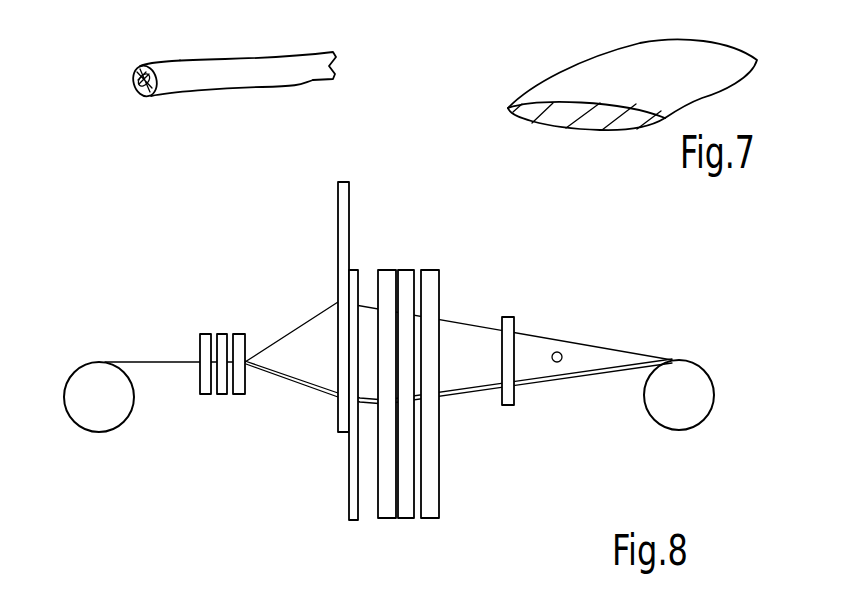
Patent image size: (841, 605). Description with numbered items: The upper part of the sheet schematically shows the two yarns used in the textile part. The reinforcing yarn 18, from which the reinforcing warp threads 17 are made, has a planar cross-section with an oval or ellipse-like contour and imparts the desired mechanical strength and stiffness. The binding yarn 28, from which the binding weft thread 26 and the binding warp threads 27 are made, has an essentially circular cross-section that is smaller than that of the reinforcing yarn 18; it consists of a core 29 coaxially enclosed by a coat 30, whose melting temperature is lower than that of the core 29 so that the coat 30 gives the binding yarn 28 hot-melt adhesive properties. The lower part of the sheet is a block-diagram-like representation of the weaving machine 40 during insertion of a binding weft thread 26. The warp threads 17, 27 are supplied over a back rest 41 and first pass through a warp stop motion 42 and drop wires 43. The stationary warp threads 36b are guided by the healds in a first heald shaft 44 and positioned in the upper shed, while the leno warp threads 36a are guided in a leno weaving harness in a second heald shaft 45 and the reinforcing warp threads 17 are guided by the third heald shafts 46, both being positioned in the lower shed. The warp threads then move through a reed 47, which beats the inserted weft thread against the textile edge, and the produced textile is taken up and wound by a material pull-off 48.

In FIG. 8, the reinforcing warp threads 17 is at (331, 387).
In FIG. 7, the reinforcing yarn 18 is at (682, 83).
In FIG. 8, the binding weft thread 26 is at (560, 352).
In FIG. 8, the binding warp threads 27 is at (155, 360).
In FIG. 7, the binding yarn 28 is at (313, 77).
In FIG. 7, the core 29 is at (137, 96).
In FIG. 7, the coat 30 is at (233, 88).
In FIG. 8, the leno warp threads 36a is at (458, 420).
In FIG. 8, the stationary warp threads 36b is at (308, 322).
In FIG. 8, the weaving machine 40 is at (560, 294).
In FIG. 8, the back rest 41 is at (102, 413).
In FIG. 8, the warp stop motion 42 is at (207, 334).
In FIG. 8, the drop wires 43 is at (223, 404).
In FIG. 8, the first heald shaft 44 is at (343, 197).
In FIG. 8, the second heald shaft 45 is at (354, 495).
In FIG. 8, the third heald shafts 46 is at (430, 278).
In FIG. 8, the reed 47 is at (508, 322).
In FIG. 8, the material pull-off 48 is at (698, 378).